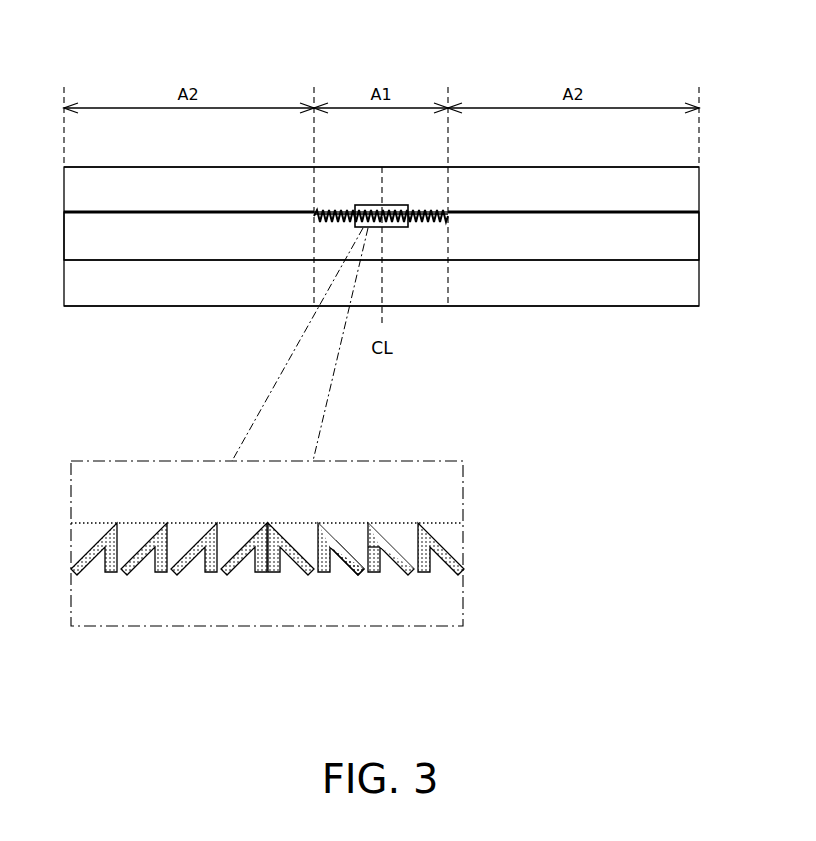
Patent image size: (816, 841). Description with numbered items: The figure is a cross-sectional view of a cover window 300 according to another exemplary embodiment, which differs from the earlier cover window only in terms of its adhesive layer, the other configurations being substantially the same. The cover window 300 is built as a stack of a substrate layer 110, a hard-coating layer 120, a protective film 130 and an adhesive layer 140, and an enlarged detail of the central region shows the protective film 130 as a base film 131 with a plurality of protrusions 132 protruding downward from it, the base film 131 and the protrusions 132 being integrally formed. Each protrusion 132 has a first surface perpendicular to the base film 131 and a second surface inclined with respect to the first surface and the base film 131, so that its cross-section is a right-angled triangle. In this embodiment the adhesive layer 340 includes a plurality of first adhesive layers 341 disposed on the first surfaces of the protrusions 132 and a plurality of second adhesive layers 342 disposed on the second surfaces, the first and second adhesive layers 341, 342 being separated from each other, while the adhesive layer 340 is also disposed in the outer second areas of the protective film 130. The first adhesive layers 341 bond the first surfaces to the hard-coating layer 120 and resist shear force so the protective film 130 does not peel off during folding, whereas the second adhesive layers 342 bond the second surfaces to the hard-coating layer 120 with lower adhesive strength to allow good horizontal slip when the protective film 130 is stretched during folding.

The cover window 300 is at (678, 29).
The substrate layer 110 is at (683, 285).
The hard-coating layer 120 is at (683, 238).
The protective film 130 is at (683, 188).
The base film 131 is at (403, 540).
The protrusions 132 is at (348, 540).
The adhesive layer 140 is at (699, 212).
The adhesive layer 340 is at (267, 610).
The first adhesive layers 341 is at (373, 574).
The second adhesive layers 342 is at (348, 574).